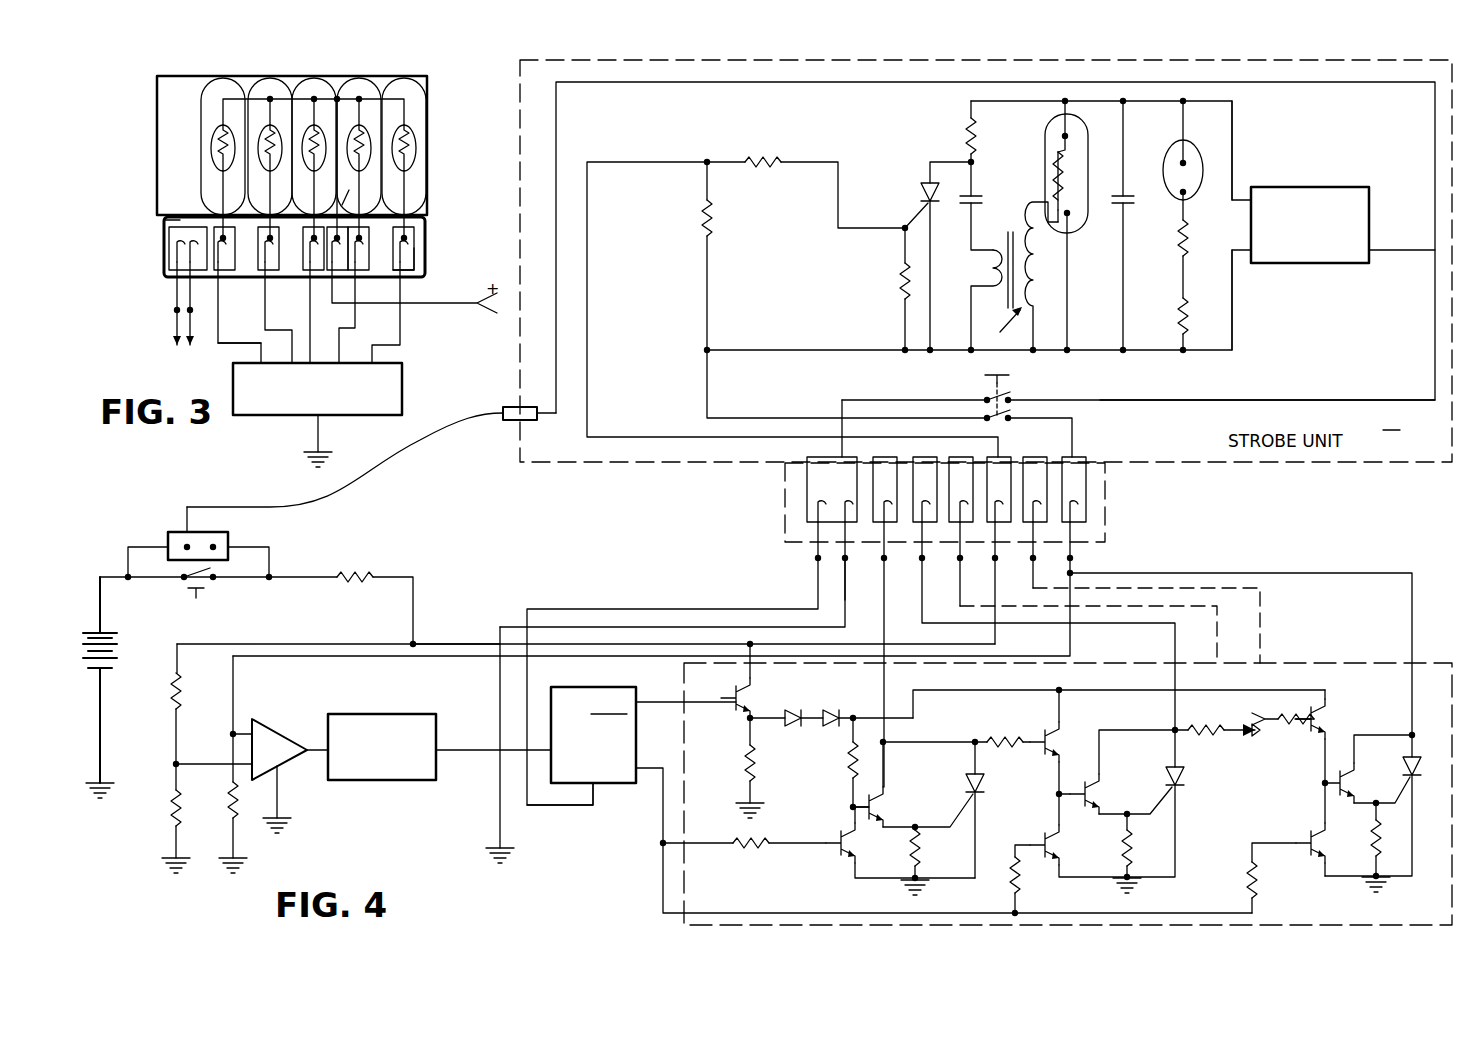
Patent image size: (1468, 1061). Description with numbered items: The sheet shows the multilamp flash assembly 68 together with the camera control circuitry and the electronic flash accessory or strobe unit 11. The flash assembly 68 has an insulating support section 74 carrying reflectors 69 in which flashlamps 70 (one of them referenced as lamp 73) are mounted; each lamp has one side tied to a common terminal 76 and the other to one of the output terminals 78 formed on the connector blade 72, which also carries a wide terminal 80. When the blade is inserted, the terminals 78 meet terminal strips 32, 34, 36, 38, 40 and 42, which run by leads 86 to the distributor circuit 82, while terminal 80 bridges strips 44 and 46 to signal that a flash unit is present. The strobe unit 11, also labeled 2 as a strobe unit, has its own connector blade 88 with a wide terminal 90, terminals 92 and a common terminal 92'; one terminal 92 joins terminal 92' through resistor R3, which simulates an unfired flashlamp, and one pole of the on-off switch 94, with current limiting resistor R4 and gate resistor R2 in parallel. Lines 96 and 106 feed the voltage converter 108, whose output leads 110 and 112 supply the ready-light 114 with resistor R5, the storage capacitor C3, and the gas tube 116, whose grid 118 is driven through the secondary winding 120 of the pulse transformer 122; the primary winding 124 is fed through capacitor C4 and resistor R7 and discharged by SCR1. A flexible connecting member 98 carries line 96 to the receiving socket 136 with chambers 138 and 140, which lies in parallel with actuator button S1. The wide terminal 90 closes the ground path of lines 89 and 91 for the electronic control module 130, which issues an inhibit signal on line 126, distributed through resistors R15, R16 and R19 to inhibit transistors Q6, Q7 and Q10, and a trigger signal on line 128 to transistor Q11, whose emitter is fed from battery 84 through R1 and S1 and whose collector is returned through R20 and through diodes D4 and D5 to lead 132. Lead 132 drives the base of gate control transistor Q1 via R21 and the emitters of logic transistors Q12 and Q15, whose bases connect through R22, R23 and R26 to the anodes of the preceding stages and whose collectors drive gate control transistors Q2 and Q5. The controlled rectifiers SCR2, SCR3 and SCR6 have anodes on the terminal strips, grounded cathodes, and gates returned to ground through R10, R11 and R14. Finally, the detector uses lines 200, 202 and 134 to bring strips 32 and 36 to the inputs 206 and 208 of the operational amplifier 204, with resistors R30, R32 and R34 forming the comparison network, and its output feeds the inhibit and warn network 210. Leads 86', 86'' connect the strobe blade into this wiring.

In FIG. 4, the strobe unit 2 is at (1391, 419).
In FIG. 4, the strobe unit 11 is at (1303, 59).
In FIG. 3, the terminal strip 32 is at (408, 280).
In FIG. 4, the terminal strip 32 is at (1080, 506).
In FIG. 3, the terminal strip 34 is at (392, 275).
In FIG. 4, the terminal strip 34 is at (1146, 592).
In FIG. 3, the terminal strip 36 is at (350, 275).
In FIG. 4, the terminal strip 36 is at (1010, 583).
In FIG. 3, the terminal strip 38 is at (312, 278).
In FIG. 4, the terminal strip 38 is at (1088, 592).
In FIG. 3, the terminal strip 40 is at (267, 282).
In FIG. 4, the terminal strip 40 is at (1048, 626).
In FIG. 3, the terminal strip 42 is at (222, 275).
In FIG. 4, the terminal strip 42 is at (900, 654).
In FIG. 3, the terminal strip 44 is at (178, 272).
In FIG. 4, the terminal strip 44 is at (862, 579).
In FIG. 3, the terminal strip 46 is at (174, 262).
In FIG. 4, the terminal strip 46 is at (814, 504).
In FIG. 3, the multilamp flash assembly 68 is at (316, 74).
In FIG. 3, the reflectors 69 is at (424, 200).
In FIG. 3, the flashlamps 70 is at (210, 140).
In FIG. 3, the connector blade 72 is at (426, 270).
In FIG. 3, the lamp 73 is at (349, 206).
In FIG. 3, the insulating block or support section 74 is at (164, 221).
In FIG. 3, the common terminal 76 is at (336, 226).
In FIG. 3, the output terminals 78 is at (410, 240).
In FIG. 3, the wide terminal 80 is at (168, 240).
In FIG. 3, the distributor circuit 82 is at (402, 386).
In FIG. 4, the distributor circuit 82 is at (1389, 714).
In FIG. 4, the battery 84 is at (116, 640).
In FIG. 3, the leads 86 is at (228, 364).
In FIG. 4, the leads 86 is at (822, 628).
In FIG. 4, the lead 86' is at (672, 663).
In FIG. 4, the lead 86'' is at (672, 574).
In FIG. 4, the connector blade 88 is at (784, 490).
In FIG. 4, the line 89 is at (527, 806).
In FIG. 4, the wide terminal 90 is at (820, 472).
In FIG. 4, the line 91 is at (498, 705).
In FIG. 4, the terminals 92 is at (1083, 470).
In FIG. 4, the common terminal 92' is at (1015, 473).
In FIG. 4, the on-off switch 94 is at (1005, 385).
In FIG. 4, the line 96 is at (907, 82).
In FIG. 4, the flexible electrical connecting member 98 is at (402, 470).
In FIG. 4, the line 106 is at (1222, 392).
In FIG. 4, the voltage converter 108 is at (1328, 264).
In FIG. 4, the output terminal or lead 110 is at (1233, 150).
In FIG. 4, the output terminal or lead 112 is at (1233, 320).
In FIG. 4, the ready-light 114 is at (1190, 154).
In FIG. 4, the gas tube 116 is at (1088, 145).
In FIG. 4, the grid terminal 118 is at (1050, 176).
In FIG. 4, the high voltage secondary winding 120 is at (1041, 266).
In FIG. 4, the pulse transformer 122 is at (999, 329).
In FIG. 4, the low voltage primary winding 124 is at (990, 270).
In FIG. 4, the output terminal 126 is at (655, 775).
In FIG. 4, the output terminal line 128 is at (652, 702).
In FIG. 4, the electronic control module 130 is at (593, 735).
In FIG. 4, the lead 132 is at (944, 690).
In FIG. 4, the interconnecting line 134 is at (440, 644).
In FIG. 4, the electrical receiving socket 136 is at (209, 530).
In FIG. 4, the receiving chamber 138 is at (184, 540).
In FIG. 4, the receiving chamber 140 is at (236, 545).
In FIG. 4, the interconnecting line 200 is at (300, 657).
In FIG. 4, the interconnecting line 202 is at (280, 644).
In FIG. 4, the operational amplifier 204 is at (270, 742).
In FIG. 4, the input terminal 206 is at (237, 732).
In FIG. 4, the input terminal 208 is at (236, 762).
In FIG. 4, the inhibit and warn network 210 is at (385, 783).
In FIG. 4, the actuator button S1 is at (204, 591).
In FIG. 4, the resistor R1 is at (358, 566).
In FIG. 4, the gate resistor R2 is at (891, 289).
In FIG. 4, the resistor R3 is at (721, 256).
In FIG. 4, the current limiting resistor R4 is at (763, 153).
In FIG. 4, the resistor R5 is at (1196, 285).
In FIG. 4, the resistor R7 is at (958, 131).
In FIG. 4, the resistor R10 is at (931, 861).
In FIG. 4, the resistor R11 is at (1140, 853).
In FIG. 4, the resistor R14 is at (1389, 847).
In FIG. 4, the current distributing resistor R15 is at (744, 856).
In FIG. 4, the current distributing resistor R16 is at (1034, 885).
In FIG. 4, the current distributing resistor R19 is at (1270, 887).
In FIG. 4, the resistor R20 is at (733, 768).
In FIG. 4, the resistor R21 is at (841, 764).
In FIG. 4, the resistor R22 is at (1002, 733).
In FIG. 4, the resistor R23 is at (1217, 722).
In FIG. 4, the resistor R26 is at (1283, 710).
In FIG. 4, the resistor R30 is at (154, 704).
In FIG. 4, the resistor R32 is at (159, 818).
In FIG. 4, the resistor R34 is at (219, 803).
In FIG. 4, the storage capacitor C3 is at (1115, 225).
In FIG. 4, the capacitor C4 is at (986, 206).
In FIG. 4, the diode D4 is at (803, 729).
In FIG. 4, the diode D5 is at (866, 729).
In FIG. 4, the gate control NPN transistor Q1 is at (886, 784).
In FIG. 4, the gate control NPN transistor Q2 is at (1117, 773).
In FIG. 4, the gate control NPN transistor Q5 is at (1370, 769).
In FIG. 4, the inhibit NPN transistor Q6 is at (900, 842).
In FIG. 4, the inhibit NPN transistor Q7 is at (1071, 851).
In FIG. 4, the inhibit NPN transistor Q10 is at (1302, 849).
In FIG. 4, the PNP transistor Q11 is at (753, 682).
In FIG. 4, the logic PNP transistor Q12 is at (1059, 757).
In FIG. 4, the logic PNP transistor Q15 is at (1324, 756).
In FIG. 4, the silicon controlled rectifier SCR1 is at (923, 256).
In FIG. 4, the silicon controlled rectifier SCR2 is at (957, 808).
In FIG. 4, the silicon controlled rectifier SCR3 is at (1178, 802).
In FIG. 4, the silicon controlled rectifier SCR6 is at (1373, 805).